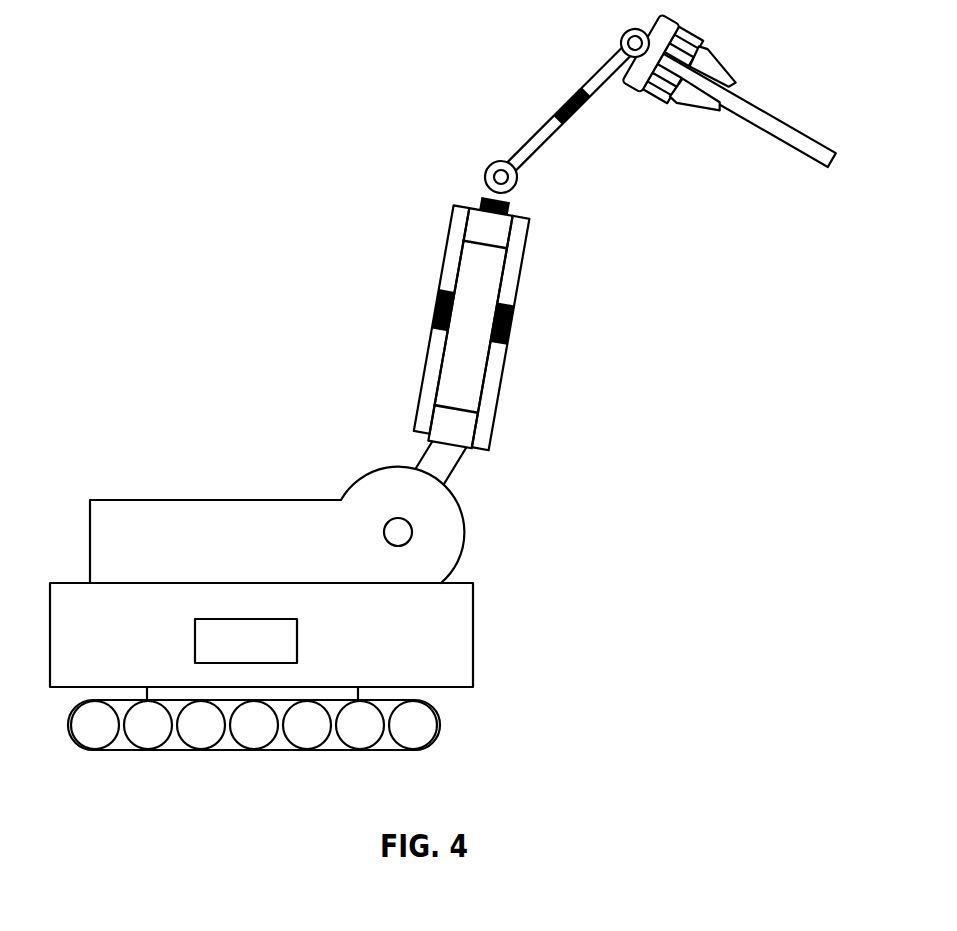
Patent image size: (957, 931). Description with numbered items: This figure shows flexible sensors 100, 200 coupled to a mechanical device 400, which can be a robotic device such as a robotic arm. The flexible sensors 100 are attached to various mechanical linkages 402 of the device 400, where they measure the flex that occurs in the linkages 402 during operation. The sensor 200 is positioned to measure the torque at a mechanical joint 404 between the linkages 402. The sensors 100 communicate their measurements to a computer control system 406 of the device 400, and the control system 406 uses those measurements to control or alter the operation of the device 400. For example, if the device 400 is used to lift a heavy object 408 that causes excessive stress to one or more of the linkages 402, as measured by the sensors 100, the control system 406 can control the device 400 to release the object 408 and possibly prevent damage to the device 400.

The mechanical device 400 is at (470, 376).
The mechanical linkages 402 is at (443, 267).
The mechanical joint 404 is at (467, 182).
The computer control system 406 is at (246, 641).
The heavy object 408 is at (818, 138).
The flexible sensors 100 is at (437, 310).
The sensor 200 is at (508, 206).